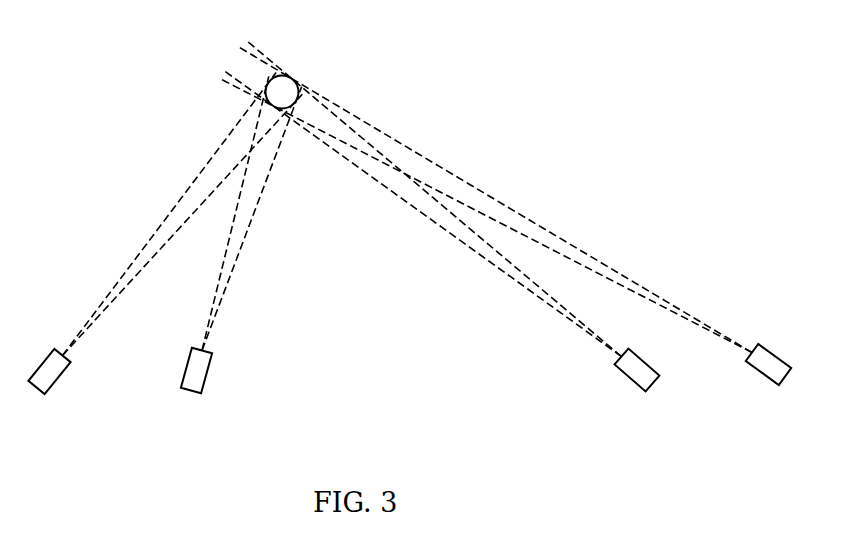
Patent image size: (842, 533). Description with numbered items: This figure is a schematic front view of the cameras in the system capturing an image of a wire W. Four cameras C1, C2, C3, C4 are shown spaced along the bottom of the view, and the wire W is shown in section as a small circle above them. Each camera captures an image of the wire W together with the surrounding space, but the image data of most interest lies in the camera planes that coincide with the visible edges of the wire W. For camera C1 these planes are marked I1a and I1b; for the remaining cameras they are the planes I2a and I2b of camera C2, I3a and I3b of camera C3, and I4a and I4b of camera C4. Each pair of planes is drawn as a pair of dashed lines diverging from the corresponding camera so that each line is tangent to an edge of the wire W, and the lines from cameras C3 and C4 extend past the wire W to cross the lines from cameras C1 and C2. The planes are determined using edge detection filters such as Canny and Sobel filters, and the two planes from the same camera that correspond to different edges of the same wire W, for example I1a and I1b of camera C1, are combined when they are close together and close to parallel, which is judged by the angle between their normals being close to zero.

The wire W is at (283, 92).
The camera C1 is at (44, 391).
The camera C2 is at (191, 390).
The camera C3 is at (627, 387).
The camera C4 is at (768, 384).
The image plane I1a is at (197, 182).
The image plane I1b is at (157, 256).
The image plane I2a is at (233, 226).
The image plane I2b is at (242, 248).
The image plane I3a is at (500, 257).
The image plane I3b is at (447, 232).
The image plane I4a is at (458, 180).
The image plane I4b is at (510, 230).